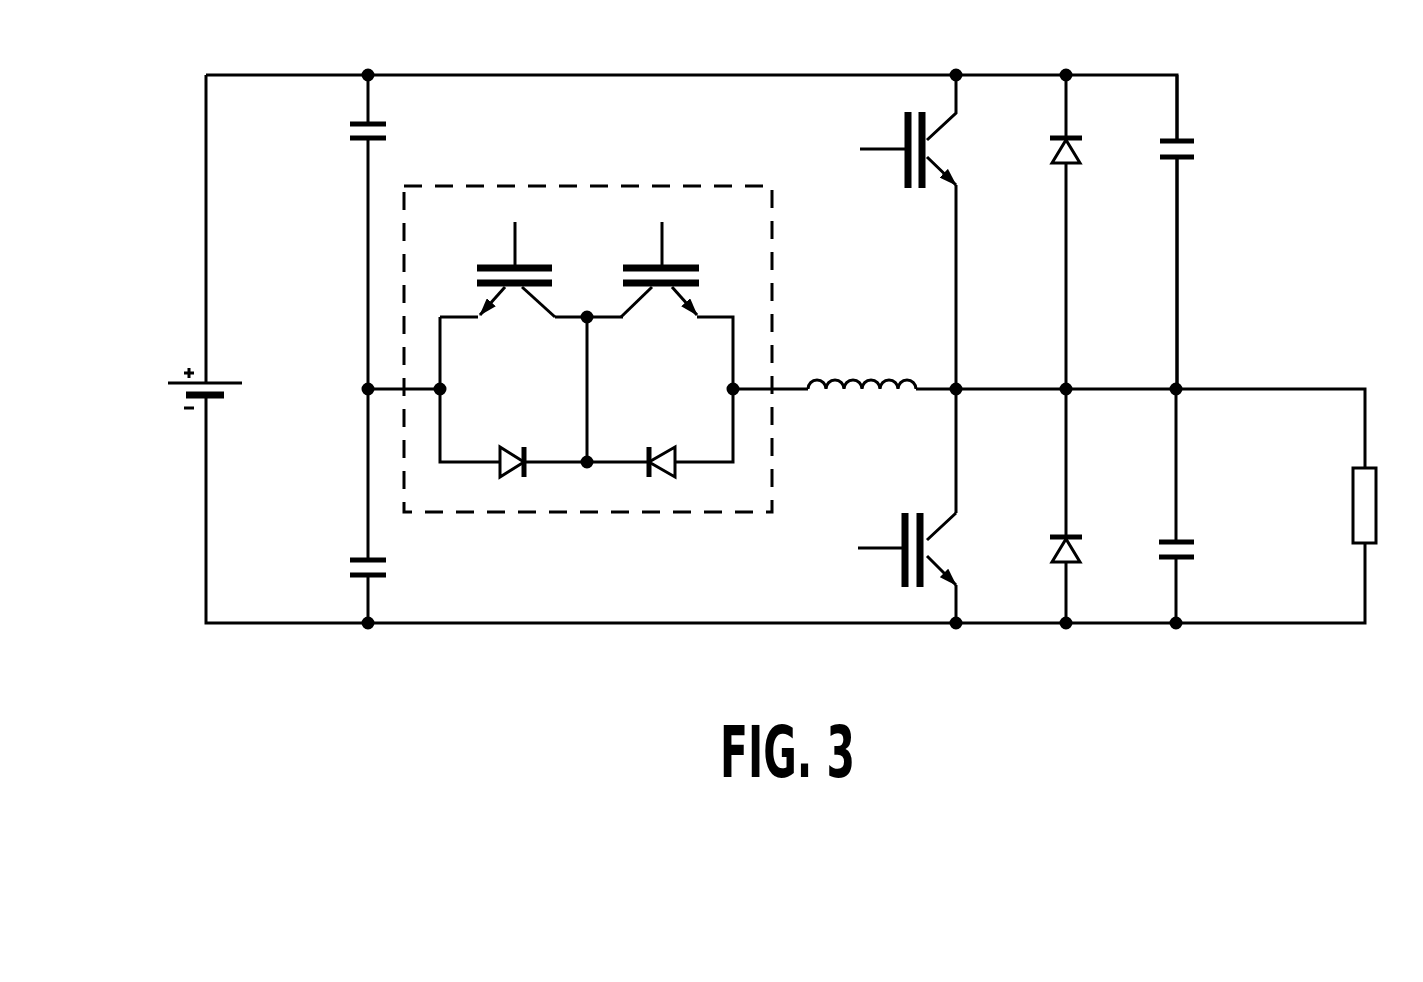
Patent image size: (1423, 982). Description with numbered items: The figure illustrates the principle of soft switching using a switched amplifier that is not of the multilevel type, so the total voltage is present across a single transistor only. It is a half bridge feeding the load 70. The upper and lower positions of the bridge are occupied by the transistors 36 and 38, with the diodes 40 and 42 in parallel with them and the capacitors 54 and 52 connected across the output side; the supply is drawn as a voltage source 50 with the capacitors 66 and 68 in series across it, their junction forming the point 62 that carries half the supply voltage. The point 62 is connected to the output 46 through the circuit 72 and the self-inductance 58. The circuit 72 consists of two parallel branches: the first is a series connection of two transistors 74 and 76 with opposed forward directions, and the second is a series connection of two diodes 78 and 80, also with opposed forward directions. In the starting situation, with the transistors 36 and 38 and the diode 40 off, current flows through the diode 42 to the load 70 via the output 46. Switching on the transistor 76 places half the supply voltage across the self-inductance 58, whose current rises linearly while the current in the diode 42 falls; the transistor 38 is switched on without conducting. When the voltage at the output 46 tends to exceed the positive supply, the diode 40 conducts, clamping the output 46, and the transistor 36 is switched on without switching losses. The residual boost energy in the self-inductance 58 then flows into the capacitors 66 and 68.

The transistor 36 is at (960, 150).
The transistor 38 is at (958, 549).
The diode 40 is at (1084, 150).
The diode 42 is at (1083, 550).
The output 46 is at (950, 392).
The DC voltage source (battery) 50 is at (177, 386).
The capacitor 52 is at (1196, 550).
The capacitor 54 is at (1196, 150).
The self-inductance 58 is at (852, 375).
The point 62 is at (364, 390).
The capacitor 66 is at (388, 131).
The capacitor 68 is at (388, 567).
The load 70 is at (1365, 505).
The circuit 72 is at (660, 186).
The transistor 74 is at (514, 295).
The transistor 76 is at (661, 295).
The diode 78 is at (511, 447).
The diode 80 is at (665, 447).